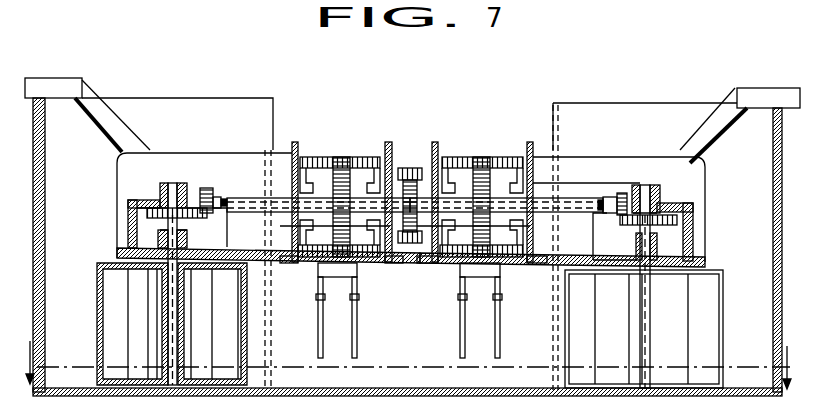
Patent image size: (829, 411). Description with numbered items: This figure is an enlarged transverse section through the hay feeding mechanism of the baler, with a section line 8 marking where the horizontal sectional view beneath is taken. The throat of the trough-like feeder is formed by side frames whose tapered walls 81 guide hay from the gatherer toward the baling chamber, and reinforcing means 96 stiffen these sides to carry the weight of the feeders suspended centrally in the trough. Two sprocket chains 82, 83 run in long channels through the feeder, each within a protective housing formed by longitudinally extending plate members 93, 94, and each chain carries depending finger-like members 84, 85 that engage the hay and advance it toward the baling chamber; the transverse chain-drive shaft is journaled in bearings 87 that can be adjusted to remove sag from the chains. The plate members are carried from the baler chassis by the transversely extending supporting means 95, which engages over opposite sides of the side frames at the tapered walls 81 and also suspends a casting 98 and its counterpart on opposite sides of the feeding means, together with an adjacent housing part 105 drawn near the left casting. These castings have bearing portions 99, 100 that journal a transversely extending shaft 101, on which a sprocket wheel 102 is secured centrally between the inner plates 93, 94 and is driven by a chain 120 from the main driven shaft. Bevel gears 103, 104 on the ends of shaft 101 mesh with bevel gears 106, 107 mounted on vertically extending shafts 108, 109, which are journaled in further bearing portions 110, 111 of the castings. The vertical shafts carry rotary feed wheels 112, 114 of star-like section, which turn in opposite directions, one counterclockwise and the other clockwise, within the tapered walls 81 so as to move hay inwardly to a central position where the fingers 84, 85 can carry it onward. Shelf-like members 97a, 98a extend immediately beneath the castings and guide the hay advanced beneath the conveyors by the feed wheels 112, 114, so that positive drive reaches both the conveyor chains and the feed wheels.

The section line 8— 8 is at (402, 357).
The tapered walls 81 is at (46, 165).
The sprocket chain 82 is at (345, 160).
The sprocket chain 83 is at (484, 160).
The hay feeding finger-like members 84 is at (323, 318).
The hay feeding finger-like members 85 is at (493, 325).
The bearings 87 is at (143, 227).
The longitudinally extending plate member 93 is at (438, 152).
The longitudinally extending plate member 94 is at (299, 150).
The transversely extending supporting means 95 is at (108, 117).
The reinforcing means 96 is at (46, 108).
The shelf-like member 97a is at (118, 257).
The casting 98 is at (693, 228).
The shelf-like member 98a is at (708, 262).
The bearing portion 99 is at (252, 207).
The bearing portion 100 is at (573, 217).
The transversely extending shaft 101 is at (207, 186).
The sprocket wheel 102 is at (410, 168).
The bevel gear 103 is at (202, 190).
The bevel gear 104 is at (650, 185).
The left gear housing 105 is at (152, 186).
The bevel gear 106 is at (705, 180).
The bevel gear 107 is at (130, 200).
The vertically extending shaft 108 is at (170, 298).
The vertically extending shaft 109 is at (693, 246).
The bearing portion 110 is at (182, 182).
The bearing portion 111 is at (625, 193).
The rotary feed wheel 112 is at (113, 332).
The rotary feed wheel 114 is at (708, 343).
The chain 120 is at (403, 167).